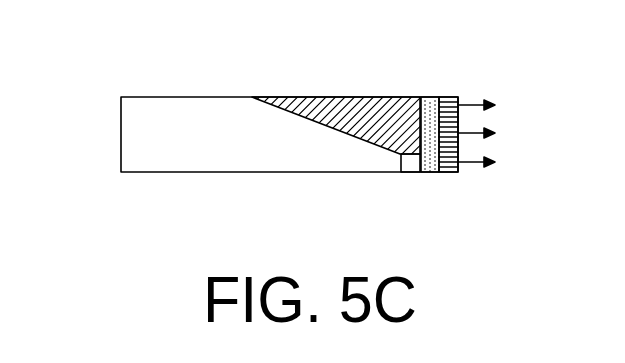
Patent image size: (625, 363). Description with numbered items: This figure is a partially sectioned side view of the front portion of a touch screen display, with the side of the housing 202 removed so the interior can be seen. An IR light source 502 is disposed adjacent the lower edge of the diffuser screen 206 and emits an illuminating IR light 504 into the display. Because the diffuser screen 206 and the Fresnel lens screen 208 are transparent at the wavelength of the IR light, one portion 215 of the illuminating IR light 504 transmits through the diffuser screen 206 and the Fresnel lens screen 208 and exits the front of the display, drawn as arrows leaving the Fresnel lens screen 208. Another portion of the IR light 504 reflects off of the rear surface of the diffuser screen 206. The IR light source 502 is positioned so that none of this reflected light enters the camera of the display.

The housing 202 is at (121, 152).
The illuminating IR light 504 is at (345, 97).
The IR light source 502 is at (412, 172).
The diffuser screen 206 is at (430, 97).
The Fresnel lens screen 208 is at (446, 97).
The portion of illuminating IR light 215 is at (465, 166).